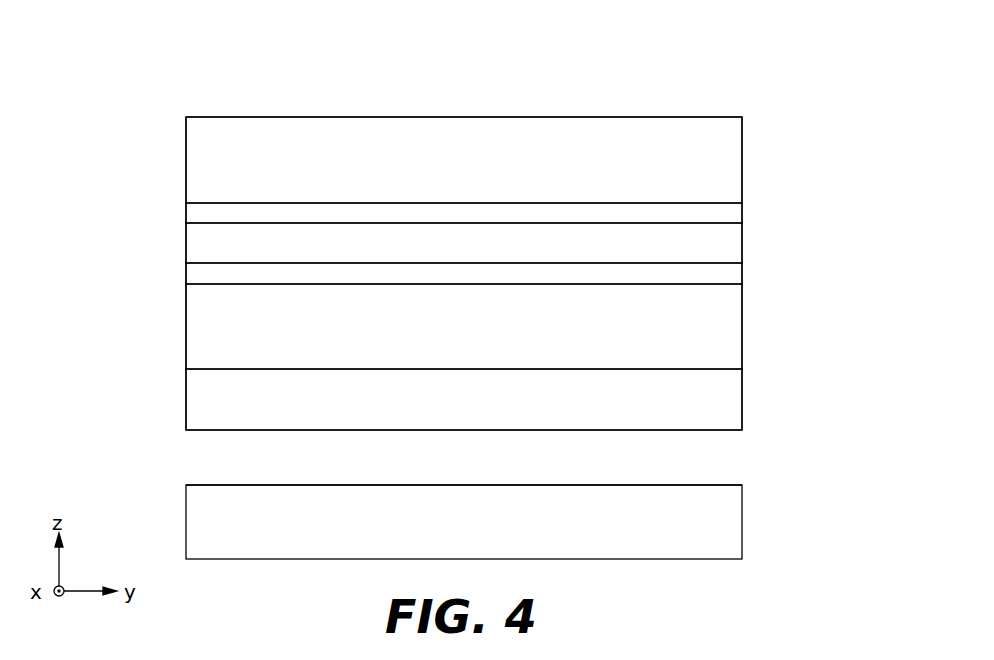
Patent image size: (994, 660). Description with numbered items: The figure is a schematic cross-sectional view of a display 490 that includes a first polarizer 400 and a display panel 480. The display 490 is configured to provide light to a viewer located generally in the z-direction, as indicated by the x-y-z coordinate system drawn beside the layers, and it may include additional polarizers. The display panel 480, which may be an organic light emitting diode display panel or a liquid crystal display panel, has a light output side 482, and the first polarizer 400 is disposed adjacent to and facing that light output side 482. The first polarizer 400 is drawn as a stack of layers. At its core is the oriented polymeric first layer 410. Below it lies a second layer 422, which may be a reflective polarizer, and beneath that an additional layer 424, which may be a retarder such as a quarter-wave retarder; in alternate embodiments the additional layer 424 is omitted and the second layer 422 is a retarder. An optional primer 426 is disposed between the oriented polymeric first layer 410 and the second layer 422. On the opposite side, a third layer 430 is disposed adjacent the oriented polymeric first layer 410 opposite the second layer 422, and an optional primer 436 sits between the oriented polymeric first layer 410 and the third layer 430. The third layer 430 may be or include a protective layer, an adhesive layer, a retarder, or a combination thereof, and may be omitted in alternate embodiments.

The display 490 is at (138, 66).
The first polarizer 400 is at (479, 272).
The third layer 430 is at (205, 160).
The primer 436 is at (205, 211).
The oriented polymeric first layer 410 is at (205, 243).
The primer 426 is at (205, 275).
The second layer 422 is at (205, 331).
The additional layer 424 is at (205, 409).
The display panel 480 is at (722, 529).
The light output side 482 is at (722, 485).